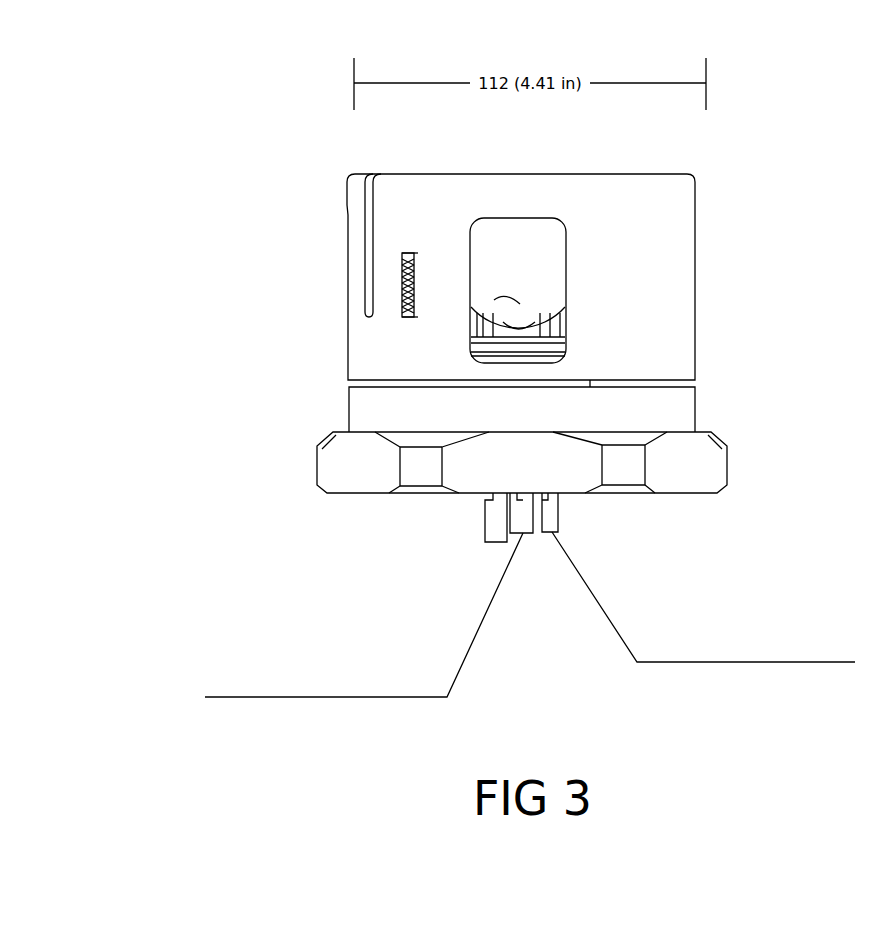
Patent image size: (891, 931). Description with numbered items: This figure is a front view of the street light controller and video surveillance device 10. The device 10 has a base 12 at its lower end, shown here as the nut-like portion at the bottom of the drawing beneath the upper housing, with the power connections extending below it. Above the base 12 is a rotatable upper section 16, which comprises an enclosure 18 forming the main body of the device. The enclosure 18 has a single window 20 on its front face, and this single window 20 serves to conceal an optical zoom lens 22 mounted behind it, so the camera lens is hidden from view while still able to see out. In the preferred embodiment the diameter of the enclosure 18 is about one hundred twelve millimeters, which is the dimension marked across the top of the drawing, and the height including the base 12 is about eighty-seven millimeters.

The street light controller and video surveillance device 10 is at (188, 192).
The base 12 is at (300, 465).
The rotatable upper section 16 is at (717, 227).
The enclosure 18 is at (668, 337).
The single window 20 is at (548, 218).
The optical zoom lens 22 is at (507, 300).